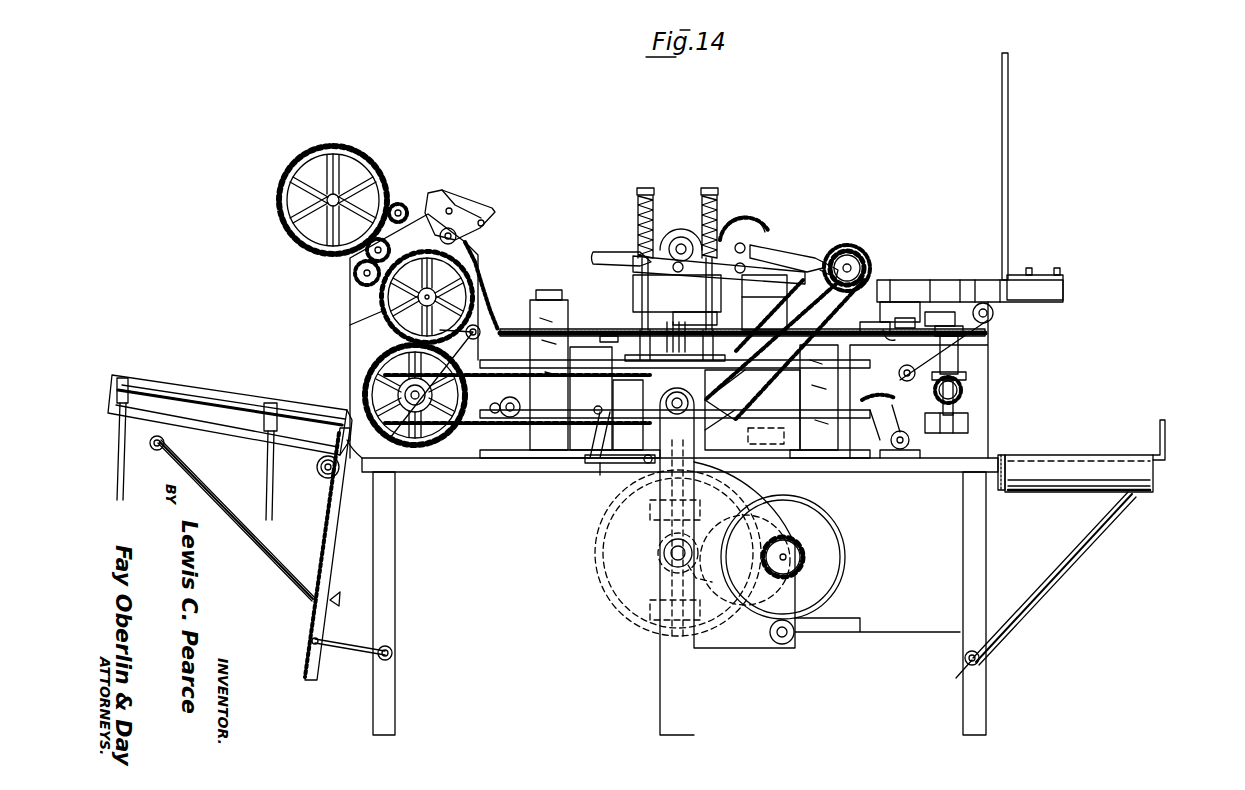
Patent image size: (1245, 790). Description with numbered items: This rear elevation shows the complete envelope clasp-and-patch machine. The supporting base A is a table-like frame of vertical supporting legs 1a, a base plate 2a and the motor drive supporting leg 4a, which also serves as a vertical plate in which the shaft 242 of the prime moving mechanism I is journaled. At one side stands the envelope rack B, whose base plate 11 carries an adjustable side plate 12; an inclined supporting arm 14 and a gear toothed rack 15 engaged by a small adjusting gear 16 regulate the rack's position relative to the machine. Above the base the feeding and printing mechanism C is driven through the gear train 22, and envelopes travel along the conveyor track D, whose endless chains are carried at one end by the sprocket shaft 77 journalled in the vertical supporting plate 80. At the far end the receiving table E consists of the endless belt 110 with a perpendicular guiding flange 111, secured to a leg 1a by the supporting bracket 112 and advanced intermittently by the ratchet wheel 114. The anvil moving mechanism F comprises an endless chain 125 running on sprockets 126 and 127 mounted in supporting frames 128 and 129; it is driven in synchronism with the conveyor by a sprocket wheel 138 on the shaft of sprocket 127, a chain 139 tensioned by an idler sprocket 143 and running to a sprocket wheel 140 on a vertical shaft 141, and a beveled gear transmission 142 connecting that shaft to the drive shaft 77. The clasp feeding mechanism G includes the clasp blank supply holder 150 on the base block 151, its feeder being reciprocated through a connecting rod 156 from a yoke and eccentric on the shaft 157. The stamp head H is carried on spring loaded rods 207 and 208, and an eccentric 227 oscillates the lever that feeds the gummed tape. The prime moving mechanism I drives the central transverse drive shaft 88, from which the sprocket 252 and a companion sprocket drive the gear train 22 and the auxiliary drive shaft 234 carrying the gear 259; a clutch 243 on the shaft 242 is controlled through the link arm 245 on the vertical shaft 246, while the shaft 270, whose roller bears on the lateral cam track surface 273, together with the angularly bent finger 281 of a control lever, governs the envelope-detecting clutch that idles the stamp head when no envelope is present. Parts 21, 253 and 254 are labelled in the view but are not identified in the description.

The supporting base A is at (860, 470).
The vertical supporting legs 1a is at (387, 548).
The motor drive supporting leg 4a is at (683, 670).
The base plate 2a is at (492, 466).
The envelope rack B is at (173, 390).
The feeding and printing mechanism C is at (410, 220).
The conveyor track D is at (874, 404).
The receiving table E is at (1062, 455).
The anvil moving mechanism F is at (575, 330).
The clasp feeding mechanism G is at (905, 292).
The clasp and patch applying stamp head H is at (680, 228).
The prime moving mechanism I is at (820, 523).
The base plate 11 is at (226, 438).
The adjustable side plate 12 is at (228, 400).
The inclined supporting arm 14 is at (243, 528).
The gear toothed rack 15 is at (328, 527).
The small adjusting gear 16 is at (318, 474).
The casing 21 is at (358, 308).
The gear train 22 is at (378, 368).
The sprocket shaft 77 is at (965, 392).
The vertical supporting plate 80 is at (978, 428).
The central transverse drive shaft 88 is at (690, 421).
The endless belt 110 is at (1150, 476).
The perpendicular guiding flange 111 is at (1167, 448).
The supporting bracket 112 is at (1060, 577).
The ratchet wheel 114 is at (1001, 490).
The endless chain 125 is at (592, 328).
The sprocket 126 is at (505, 372).
The sprocket 127 is at (872, 380).
The supporting frame 128 is at (541, 302).
The supporting frame 129 is at (808, 396).
The sprocket wheel 138 is at (912, 295).
The chain 139 is at (895, 330).
The sprocket wheel 140 is at (995, 318).
The vertical shaft 141 is at (962, 345).
The beveled gear transmission 142 is at (968, 378).
The idler sprocket 143 is at (910, 337).
The clasp blank supply holder 150 is at (1008, 205).
The base block 151 is at (1040, 275).
The connecting rod 156 is at (840, 248).
The shaft 157 is at (768, 248).
The spring loaded rod 207 is at (648, 188).
The spring loaded rod 208 is at (713, 188).
The eccentric 227 is at (685, 238).
The auxiliary drive shaft 234 is at (860, 255).
The shaft 242 is at (664, 553).
The clutch 243 is at (690, 508).
The link arm 245 is at (620, 438).
The vertical shaft 246 is at (596, 413).
The sprocket 252 is at (766, 436).
The bar 253 is at (590, 468).
The lever 254 is at (742, 396).
The gear 259 is at (745, 225).
The shaft 270 is at (640, 576).
The lateral cam track surface 273 is at (708, 576).
The angularly bent finger 281 is at (603, 470).